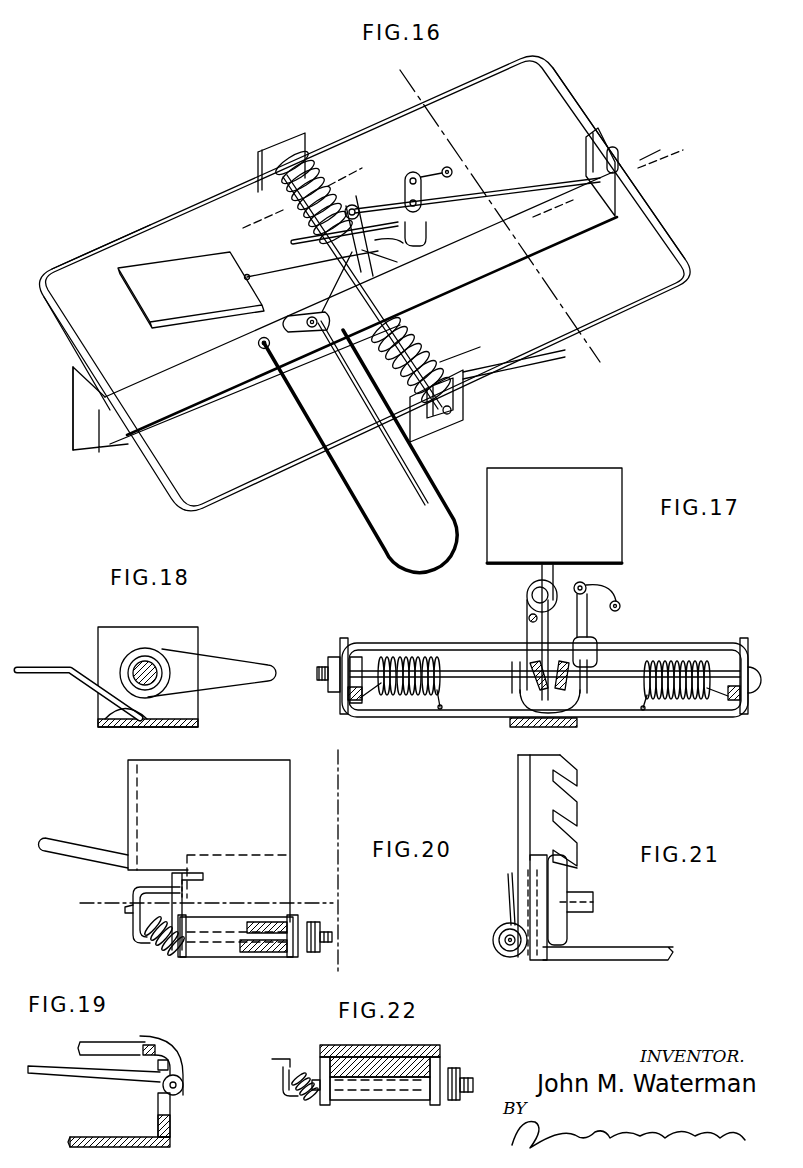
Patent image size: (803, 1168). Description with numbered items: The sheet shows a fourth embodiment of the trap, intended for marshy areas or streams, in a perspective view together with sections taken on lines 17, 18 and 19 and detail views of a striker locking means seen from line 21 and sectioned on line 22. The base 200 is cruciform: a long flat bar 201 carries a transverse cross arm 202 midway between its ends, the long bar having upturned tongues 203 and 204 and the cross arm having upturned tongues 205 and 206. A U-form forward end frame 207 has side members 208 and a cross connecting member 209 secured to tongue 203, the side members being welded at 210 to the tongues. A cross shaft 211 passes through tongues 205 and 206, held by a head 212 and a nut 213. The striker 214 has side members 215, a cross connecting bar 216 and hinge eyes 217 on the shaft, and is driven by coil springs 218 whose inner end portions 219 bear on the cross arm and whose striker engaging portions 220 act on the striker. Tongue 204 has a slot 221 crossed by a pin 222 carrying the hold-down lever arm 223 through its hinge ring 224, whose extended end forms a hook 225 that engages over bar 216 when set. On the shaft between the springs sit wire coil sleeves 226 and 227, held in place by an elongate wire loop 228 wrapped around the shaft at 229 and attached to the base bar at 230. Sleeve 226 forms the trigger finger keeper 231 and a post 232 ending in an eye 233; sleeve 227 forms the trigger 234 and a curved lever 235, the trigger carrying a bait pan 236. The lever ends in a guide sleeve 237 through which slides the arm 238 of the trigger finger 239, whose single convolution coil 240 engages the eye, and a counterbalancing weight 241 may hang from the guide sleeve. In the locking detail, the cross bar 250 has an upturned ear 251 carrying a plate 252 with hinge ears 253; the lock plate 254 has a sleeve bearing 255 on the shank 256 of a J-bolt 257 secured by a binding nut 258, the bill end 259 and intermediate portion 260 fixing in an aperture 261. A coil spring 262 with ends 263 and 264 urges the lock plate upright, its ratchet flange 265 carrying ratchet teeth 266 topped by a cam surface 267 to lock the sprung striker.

In FIG. 16, the base 200 is at (72, 410).
In FIG. 16, the long flat bar 201 is at (233, 383).
In FIG. 16, the transverse cross arm 202 is at (365, 372).
In FIG. 16, the upstanding tongue 203 is at (92, 415).
In FIG. 16, the upstanding tongue 204 is at (598, 135).
In FIG. 16, the upturned end tongue 205 is at (270, 157).
In FIG. 18, the upturned end tongue 205 is at (185, 648).
In FIG. 16, the upturned end tongue 206 is at (423, 423).
In FIG. 17, the upturned end tongue 206 is at (340, 640).
In FIG. 16, the open forward end frame 207 is at (78, 250).
In FIG. 16, the side members 208 is at (147, 227).
In FIG. 17, the side members 208 is at (545, 680).
In FIG. 18, the side members 208 is at (52, 672).
In FIG. 16, the cross connecting member 209 is at (63, 330).
In FIG. 18, the weld 210 is at (123, 728).
In FIG. 16, the cross shaft 211 is at (387, 323).
In FIG. 17, the cross shaft 211 is at (482, 673).
In FIG. 18, the cross shaft 211 is at (133, 668).
In FIG. 17, the head 212 is at (750, 640).
In FIG. 17, the nut 213 is at (332, 682).
In FIG. 16, the striker 214 is at (578, 85).
In FIG. 16, the side members 215 is at (478, 78).
In FIG. 18, the side members 215 is at (242, 680).
In FIG. 16, the cross connecting bar 216 is at (683, 240).
In FIG. 19, the cross connecting bar 216 is at (130, 1045).
In FIG. 18, the hinge eyes 217 is at (143, 647).
In FIG. 16, the driving springs 218 is at (363, 277).
In FIG. 17, the driving springs 218 is at (407, 660).
In FIG. 17, the inner end portion 219 is at (647, 710).
In FIG. 16, the striker engaging portion 220 is at (497, 367).
In FIG. 16, the slot 221 is at (614, 150).
In FIG. 19, the slot 221 is at (173, 1065).
In FIG. 19, the pin 222 is at (167, 1087).
In FIG. 16, the hold-down lever arm 223 is at (528, 192).
In FIG. 17, the hold-down lever arm 223 is at (529, 619).
In FIG. 19, the hold-down lever arm 223 is at (70, 1077).
In FIG. 19, the hinge ring 224 is at (180, 1097).
In FIG. 16, the hook 225 is at (648, 142).
In FIG. 19, the hook 225 is at (158, 1035).
In FIG. 17, the wire coil sleeve 226 is at (538, 702).
In FIG. 17, the wire coil sleeve 227 is at (563, 690).
In FIG. 16, the elongate wire loop 228 is at (325, 352).
In FIG. 17, the wrapped end portions 229 is at (515, 662).
In FIG. 16, the rivet attachment 230 is at (288, 325).
In FIG. 16, the trigger finger keeper 231 is at (377, 260).
In FIG. 17, the trigger finger keeper 231 is at (513, 703).
In FIG. 16, the post 232 is at (300, 254).
In FIG. 17, the post 232 is at (560, 636).
In FIG. 17, the eye 233 is at (542, 575).
In FIG. 16, the trigger 234 is at (292, 270).
In FIG. 16, the curved lever 235 is at (397, 237).
In FIG. 16, the bait pan 236 is at (160, 303).
In FIG. 17, the bait pan 236 is at (557, 492).
In FIG. 16, the guide sleeve 237 is at (413, 173).
In FIG. 17, the guide sleeve 237 is at (590, 585).
In FIG. 16, the elongate arm 238 is at (440, 163).
In FIG. 17, the elongate arm 238 is at (622, 605).
In FIG. 16, the trigger finger 239 is at (380, 257).
In FIG. 17, the single convolution coil 240 is at (527, 592).
In FIG. 16, the counterbalancing weight 241 is at (423, 229).
In FIG. 21, the cross bar 250 is at (635, 957).
In FIG. 21, the upturned ear 251 is at (543, 947).
In FIG. 22, the upturned ear 251 is at (413, 1052).
In FIG. 21, the plate 252 is at (528, 862).
In FIG. 22, the plate 252 is at (358, 1060).
In FIG. 20, the hinge ears 253 is at (293, 922).
In FIG. 21, the hinge ears 253 is at (497, 953).
In FIG. 22, the hinge ears 253 is at (325, 1105).
In FIG. 20, the lock plate 254 is at (258, 820).
In FIG. 20, the sleeve bearing 255 is at (280, 947).
In FIG. 22, the sleeve bearing 255 is at (397, 1095).
In FIG. 20, the shank 256 is at (257, 933).
In FIG. 20, the J-bolt 257 is at (135, 945).
In FIG. 20, the binding nut 258 is at (332, 945).
In FIG. 21, the binding nut 258 is at (505, 927).
In FIG. 22, the binding nut 258 is at (460, 1070).
In FIG. 20, the bill end 259 is at (153, 887).
In FIG. 20, the intermediate portion 260 is at (132, 938).
In FIG. 22, the intermediate portion 260 is at (283, 1068).
In FIG. 20, the aperture 261 is at (203, 886).
In FIG. 20, the coil spring 262 is at (178, 935).
In FIG. 22, the coil spring 262 is at (300, 1097).
In FIG. 20, the spring end 263 is at (132, 910).
In FIG. 22, the spring end 263 is at (282, 1057).
In FIG. 20, the spring end 264 is at (195, 873).
In FIG. 21, the ratchet flange 265 is at (533, 812).
In FIG. 21, the ratchet teeth 266 is at (570, 812).
In FIG. 21, the cam surface 267 is at (550, 758).
In FIG. 16, the section line 17— 17 is at (412, 66).
In FIG. 16, the section line 18— 18 is at (346, 165).
In FIG. 16, the section line 19— 19 is at (653, 140).
In FIG. 20, the section line 21— 21 is at (353, 765).
In FIG. 20, the section line 22— 22 is at (95, 888).